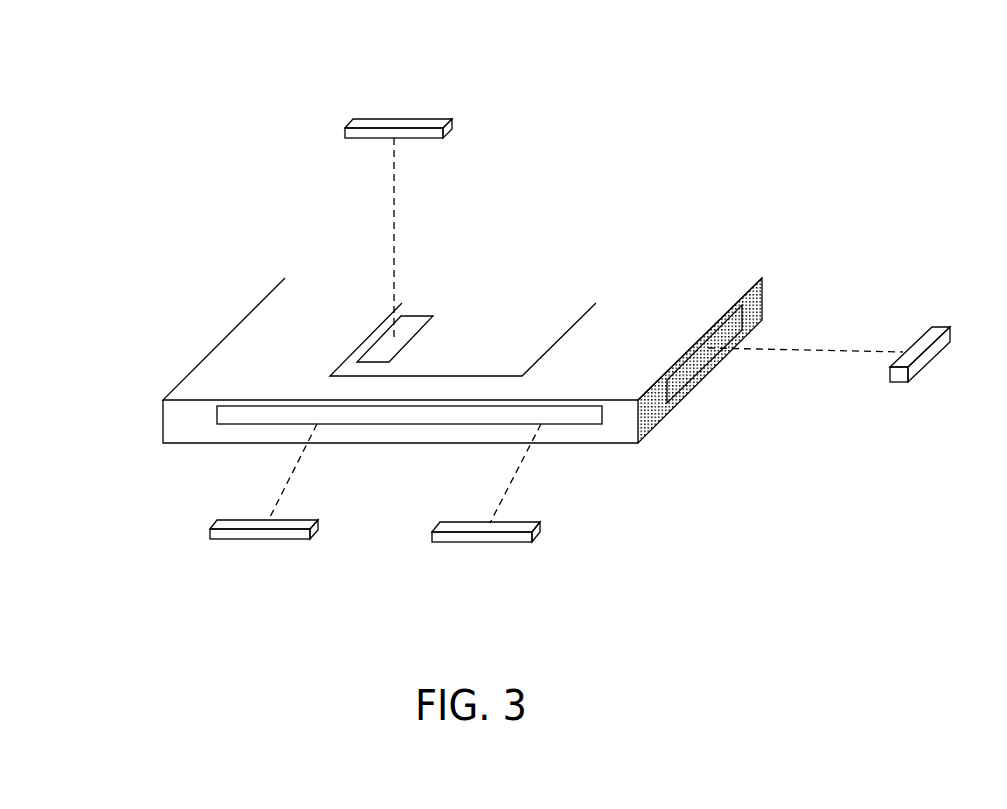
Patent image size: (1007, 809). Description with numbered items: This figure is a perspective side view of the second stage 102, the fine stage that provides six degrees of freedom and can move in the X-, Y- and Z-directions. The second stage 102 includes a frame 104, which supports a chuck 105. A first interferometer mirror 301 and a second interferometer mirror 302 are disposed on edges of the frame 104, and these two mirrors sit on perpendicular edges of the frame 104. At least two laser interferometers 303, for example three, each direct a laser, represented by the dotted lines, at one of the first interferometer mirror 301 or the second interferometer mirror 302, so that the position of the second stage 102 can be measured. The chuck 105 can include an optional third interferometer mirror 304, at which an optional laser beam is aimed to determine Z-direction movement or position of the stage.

The second stage 102 is at (188, 257).
The frame 104 is at (163, 425).
The chuck 105 is at (537, 318).
The first interferometer mirror 301 is at (392, 424).
The second interferometer mirror 302 is at (697, 370).
The laser interferometer 303 is at (410, 127).
The third interferometer mirror 304 is at (377, 350).